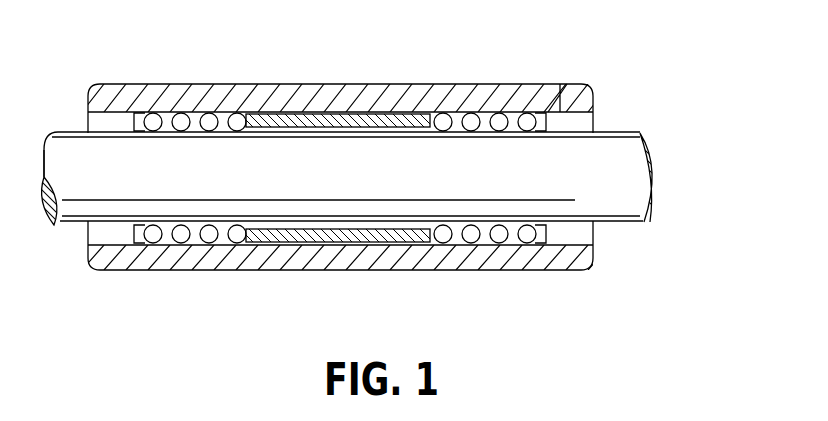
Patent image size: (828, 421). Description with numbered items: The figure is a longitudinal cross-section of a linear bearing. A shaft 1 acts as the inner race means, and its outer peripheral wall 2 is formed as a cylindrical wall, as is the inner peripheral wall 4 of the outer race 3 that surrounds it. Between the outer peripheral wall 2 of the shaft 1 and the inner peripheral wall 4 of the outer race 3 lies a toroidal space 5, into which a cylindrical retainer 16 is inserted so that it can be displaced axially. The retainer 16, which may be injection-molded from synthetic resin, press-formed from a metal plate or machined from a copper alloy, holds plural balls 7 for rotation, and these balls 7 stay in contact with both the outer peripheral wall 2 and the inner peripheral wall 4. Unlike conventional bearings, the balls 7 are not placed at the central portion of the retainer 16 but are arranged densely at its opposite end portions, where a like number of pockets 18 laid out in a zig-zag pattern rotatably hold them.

The shaft 1 is at (657, 188).
The outer peripheral wall 2 is at (397, 150).
The outer race 3 is at (594, 258).
The inner peripheral wall 4 is at (313, 113).
The toroidal space 5 is at (563, 125).
The balls 7 is at (184, 113).
The cylindrical retainer 16 is at (277, 246).
The pockets 18 is at (212, 113).